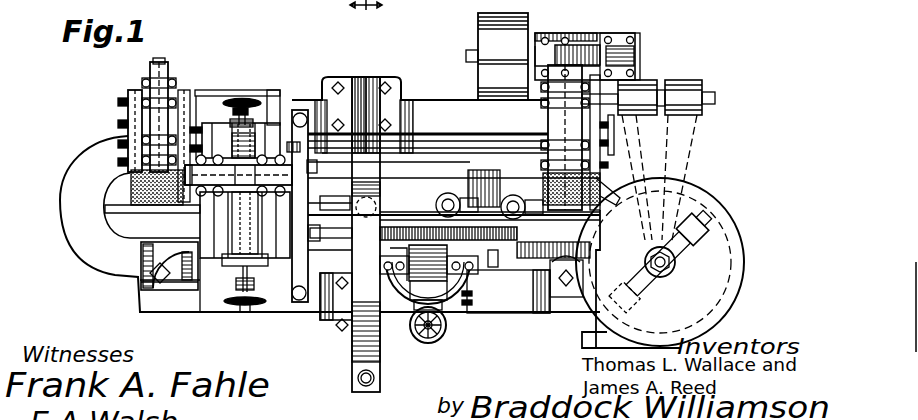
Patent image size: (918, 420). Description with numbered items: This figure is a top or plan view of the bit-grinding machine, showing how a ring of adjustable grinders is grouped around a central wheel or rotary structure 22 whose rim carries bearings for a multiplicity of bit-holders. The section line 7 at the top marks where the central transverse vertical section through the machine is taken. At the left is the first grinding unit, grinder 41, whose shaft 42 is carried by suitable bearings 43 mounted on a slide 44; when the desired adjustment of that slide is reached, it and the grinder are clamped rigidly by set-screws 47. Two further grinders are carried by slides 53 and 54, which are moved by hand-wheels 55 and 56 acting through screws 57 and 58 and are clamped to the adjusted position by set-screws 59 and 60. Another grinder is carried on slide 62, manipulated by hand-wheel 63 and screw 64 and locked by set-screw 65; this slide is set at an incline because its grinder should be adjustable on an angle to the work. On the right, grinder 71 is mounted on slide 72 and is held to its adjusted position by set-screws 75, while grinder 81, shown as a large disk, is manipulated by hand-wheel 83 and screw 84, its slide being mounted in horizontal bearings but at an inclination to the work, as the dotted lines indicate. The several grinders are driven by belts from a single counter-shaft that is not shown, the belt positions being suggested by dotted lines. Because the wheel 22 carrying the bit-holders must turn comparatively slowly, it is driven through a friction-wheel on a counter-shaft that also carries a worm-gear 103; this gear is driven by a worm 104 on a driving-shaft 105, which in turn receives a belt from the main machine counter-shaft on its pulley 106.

The section line 7 is at (366, 12).
The wheel or rotary structure 22 is at (422, 182).
The casing 41 is at (130, 174).
The vertical shaft 42 is at (158, 62).
The bearings 43 is at (152, 93).
The slide 44 is at (142, 131).
The set-screws 47 is at (128, 122).
The slide 53 is at (266, 256).
The slide 54 is at (263, 140).
The hand-wheel 55 is at (253, 312).
The hand-wheel 56 is at (245, 93).
The screw 57 is at (231, 289).
The screw 58 is at (243, 128).
The set-screw 59 is at (197, 283).
The set-screw 60 is at (195, 126).
The slide 62 is at (447, 305).
The hand-wheel 63 is at (431, 345).
The screw 64 is at (413, 318).
The set-screw 65 is at (472, 298).
The grinder 71 is at (600, 130).
The slide 72 is at (556, 118).
The set-screws 75 is at (596, 148).
The grinder 81 is at (661, 243).
The hand-wheel 83 is at (668, 302).
The screw 84 is at (651, 271).
The worm-gear 103 is at (611, 36).
The worm 104 is at (578, 42).
The driving-shaft 105 is at (468, 55).
The pulley 106 is at (503, 56).